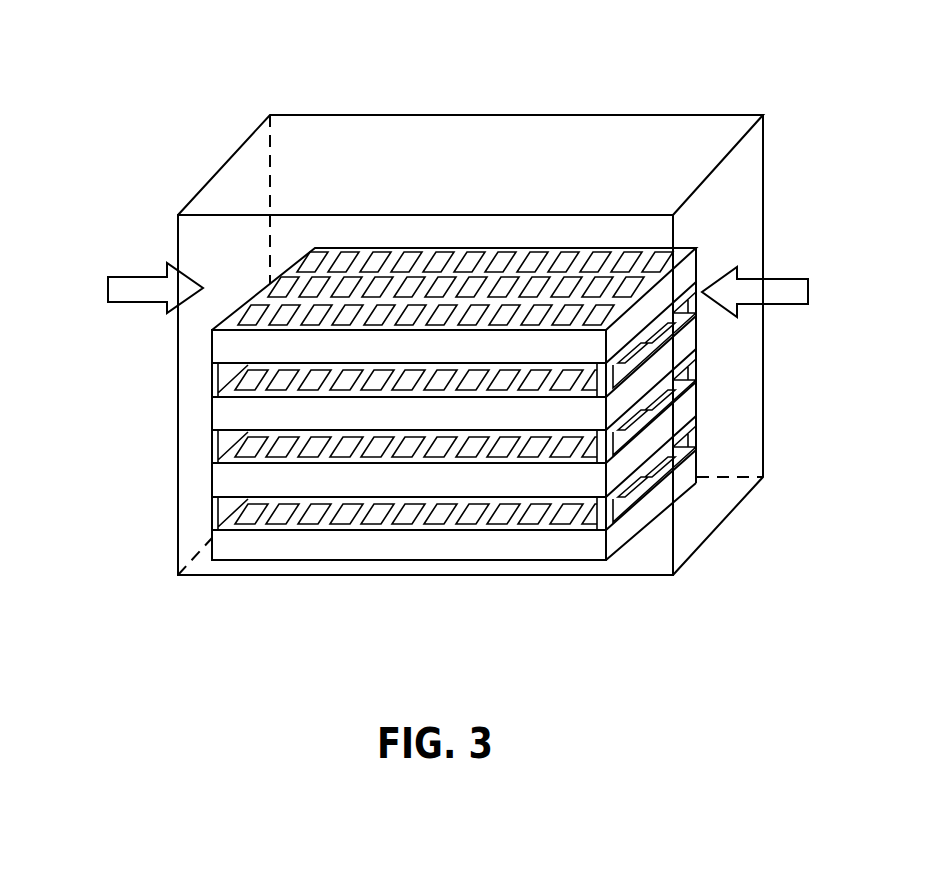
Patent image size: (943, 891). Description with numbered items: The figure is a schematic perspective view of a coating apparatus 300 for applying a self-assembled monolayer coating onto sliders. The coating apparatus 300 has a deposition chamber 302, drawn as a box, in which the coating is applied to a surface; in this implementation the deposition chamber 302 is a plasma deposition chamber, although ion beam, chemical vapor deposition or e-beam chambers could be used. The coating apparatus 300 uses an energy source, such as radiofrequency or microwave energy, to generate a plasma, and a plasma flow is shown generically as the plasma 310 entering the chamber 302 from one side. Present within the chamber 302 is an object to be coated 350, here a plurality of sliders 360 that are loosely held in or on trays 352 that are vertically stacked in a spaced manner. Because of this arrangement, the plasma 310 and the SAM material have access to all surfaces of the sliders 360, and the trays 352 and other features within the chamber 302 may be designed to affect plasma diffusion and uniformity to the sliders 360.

The coating apparatus 300 is at (178, 69).
The deposition chamber 302 is at (178, 406).
The plasma 310 is at (128, 277).
The object to be coated 350 is at (448, 366).
The trays 352 is at (697, 267).
The sliders 360 is at (282, 277).